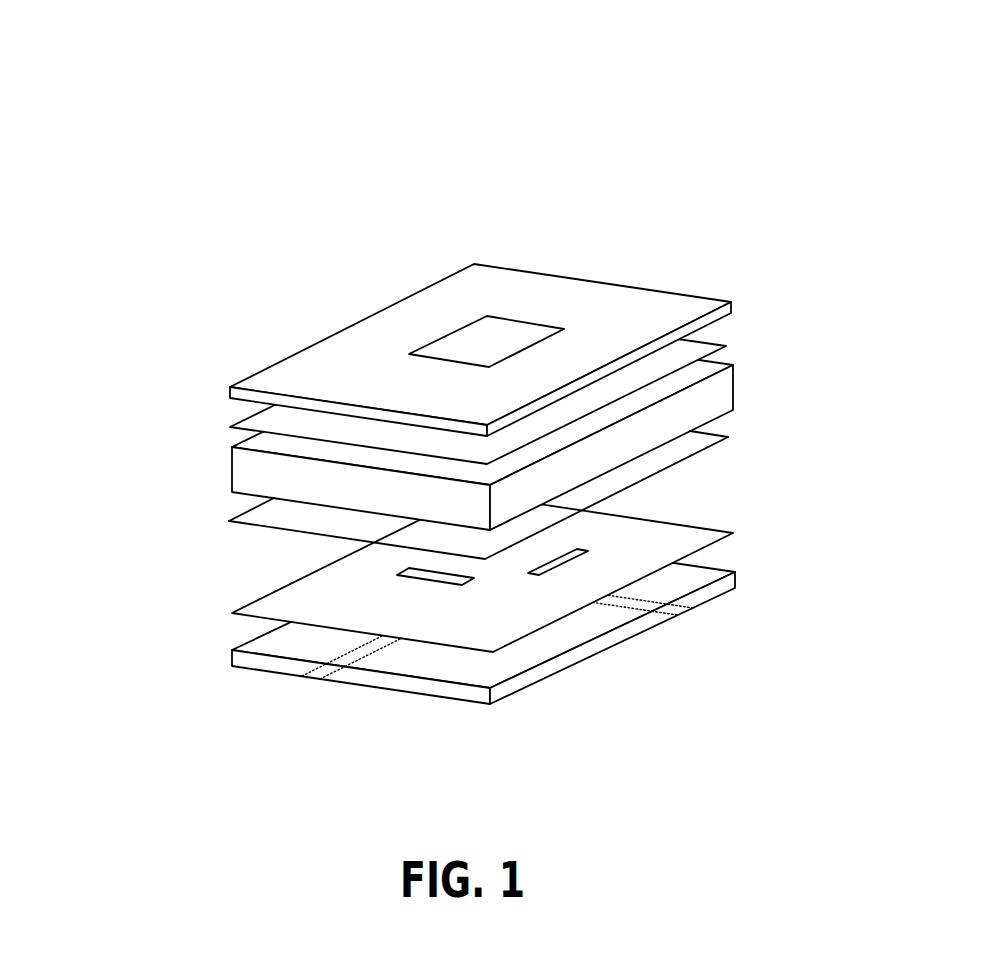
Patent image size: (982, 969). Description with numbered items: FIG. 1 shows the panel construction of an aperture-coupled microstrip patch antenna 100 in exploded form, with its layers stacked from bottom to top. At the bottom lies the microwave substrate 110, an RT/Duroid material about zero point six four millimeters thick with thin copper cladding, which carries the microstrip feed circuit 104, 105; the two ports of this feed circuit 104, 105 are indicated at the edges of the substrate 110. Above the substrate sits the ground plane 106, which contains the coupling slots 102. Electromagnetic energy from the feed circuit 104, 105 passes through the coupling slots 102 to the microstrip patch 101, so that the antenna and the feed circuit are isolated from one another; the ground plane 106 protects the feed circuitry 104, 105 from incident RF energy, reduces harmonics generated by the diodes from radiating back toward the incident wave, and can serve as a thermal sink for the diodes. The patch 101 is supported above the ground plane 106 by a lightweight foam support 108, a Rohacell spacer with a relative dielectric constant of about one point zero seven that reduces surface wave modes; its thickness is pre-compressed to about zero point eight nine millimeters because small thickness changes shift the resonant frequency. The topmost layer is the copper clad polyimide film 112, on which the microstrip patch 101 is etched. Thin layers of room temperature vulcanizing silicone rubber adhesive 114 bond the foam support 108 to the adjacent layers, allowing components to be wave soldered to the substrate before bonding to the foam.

The microstrip patch antenna 100 is at (516, 410).
The microstrip patch 101 is at (491, 330).
The coupling slot 102 is at (501, 563).
The feed circuit 104 is at (307, 682).
The feed circuit 105 is at (688, 610).
The ground plane 106 is at (733, 533).
The foam support 108 is at (232, 473).
The microwave substrate 110 is at (503, 697).
The copper clad polyimide film 112 is at (325, 337).
The silicone rubber adhesive 114 is at (728, 437).